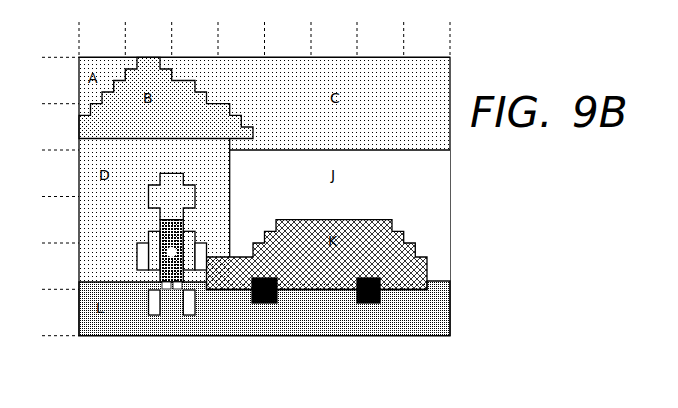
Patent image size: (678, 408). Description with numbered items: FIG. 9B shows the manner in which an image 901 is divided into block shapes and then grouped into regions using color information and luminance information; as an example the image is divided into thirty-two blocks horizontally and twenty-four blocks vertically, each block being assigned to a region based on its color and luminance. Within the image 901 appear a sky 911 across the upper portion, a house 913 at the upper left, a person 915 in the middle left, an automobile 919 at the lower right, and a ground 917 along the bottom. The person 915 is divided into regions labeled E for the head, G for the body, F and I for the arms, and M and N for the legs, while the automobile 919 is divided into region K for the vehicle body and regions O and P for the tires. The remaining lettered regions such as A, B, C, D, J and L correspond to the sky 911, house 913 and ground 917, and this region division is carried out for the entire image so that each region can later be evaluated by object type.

The image 901 is at (78, 56).
The sky 911 is at (292, 62).
The house 913 is at (80, 183).
The person 915 is at (147, 241).
The ground 917 is at (80, 323).
The automobile 919 is at (322, 291).